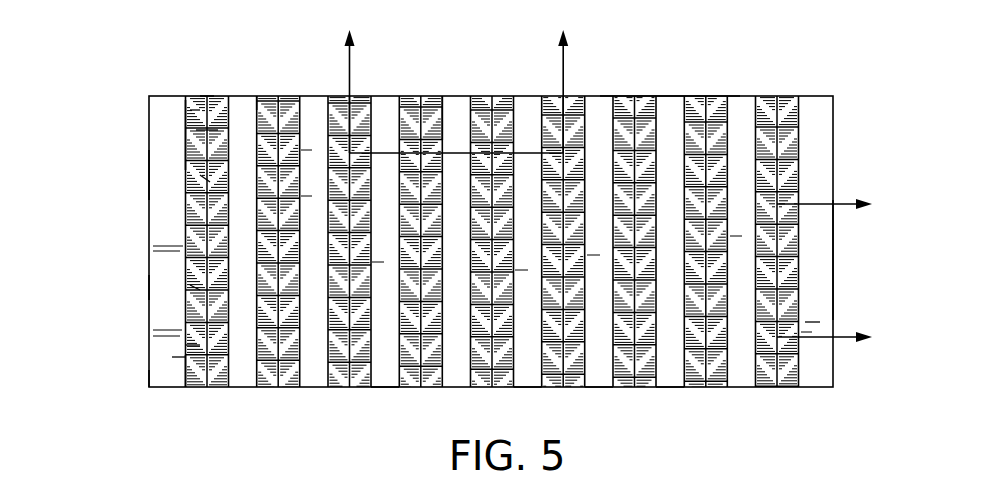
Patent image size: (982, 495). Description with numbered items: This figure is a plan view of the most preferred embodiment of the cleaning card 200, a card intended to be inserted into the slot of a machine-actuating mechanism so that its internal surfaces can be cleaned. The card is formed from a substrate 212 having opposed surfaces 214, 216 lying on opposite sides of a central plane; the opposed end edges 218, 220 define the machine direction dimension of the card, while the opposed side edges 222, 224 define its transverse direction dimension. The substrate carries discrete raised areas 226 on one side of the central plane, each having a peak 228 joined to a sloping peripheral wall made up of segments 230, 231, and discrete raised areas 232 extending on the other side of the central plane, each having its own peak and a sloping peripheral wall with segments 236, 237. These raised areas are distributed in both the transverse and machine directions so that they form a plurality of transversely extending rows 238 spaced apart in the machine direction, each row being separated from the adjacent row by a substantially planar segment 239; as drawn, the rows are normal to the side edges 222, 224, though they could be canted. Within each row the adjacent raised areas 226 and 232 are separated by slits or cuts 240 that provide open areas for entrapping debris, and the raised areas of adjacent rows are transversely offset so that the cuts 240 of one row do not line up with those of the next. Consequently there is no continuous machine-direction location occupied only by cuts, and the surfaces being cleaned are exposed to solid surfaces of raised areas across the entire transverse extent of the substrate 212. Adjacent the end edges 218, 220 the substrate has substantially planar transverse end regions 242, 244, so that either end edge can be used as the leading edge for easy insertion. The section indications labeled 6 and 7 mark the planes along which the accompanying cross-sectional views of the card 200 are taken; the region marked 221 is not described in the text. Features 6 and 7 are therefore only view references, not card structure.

The cleaning card 200 is at (796, 66).
The substrate 212 is at (669, 90).
The surface 214 is at (183, 362).
The surface 216 is at (148, 169).
The end edge 218 is at (836, 258).
The end edge 220 is at (149, 287).
The transition region 221 is at (200, 181).
The side edge 222 is at (450, 95).
The side edge 224 is at (390, 390).
The discrete raised area 226 is at (211, 91).
The peak 228 is at (220, 107).
The sloping peripheral wall segment 230 is at (258, 93).
The sloping peripheral wall segment 231 is at (196, 110).
The discrete raised area 232 is at (192, 284).
The sloping peripheral wall segment 236 is at (178, 357).
The sloping peripheral wall segment 237 is at (190, 345).
The transversely extending row 238 is at (423, 95).
The substantially planar segment 239 is at (533, 380).
The slit or cut 240 is at (133, 129).
The transverse end region 242 is at (818, 322).
The transverse end region 244 is at (160, 387).
The section line 6- 6 is at (837, 271).
The section line 7- 7 is at (455, 79).